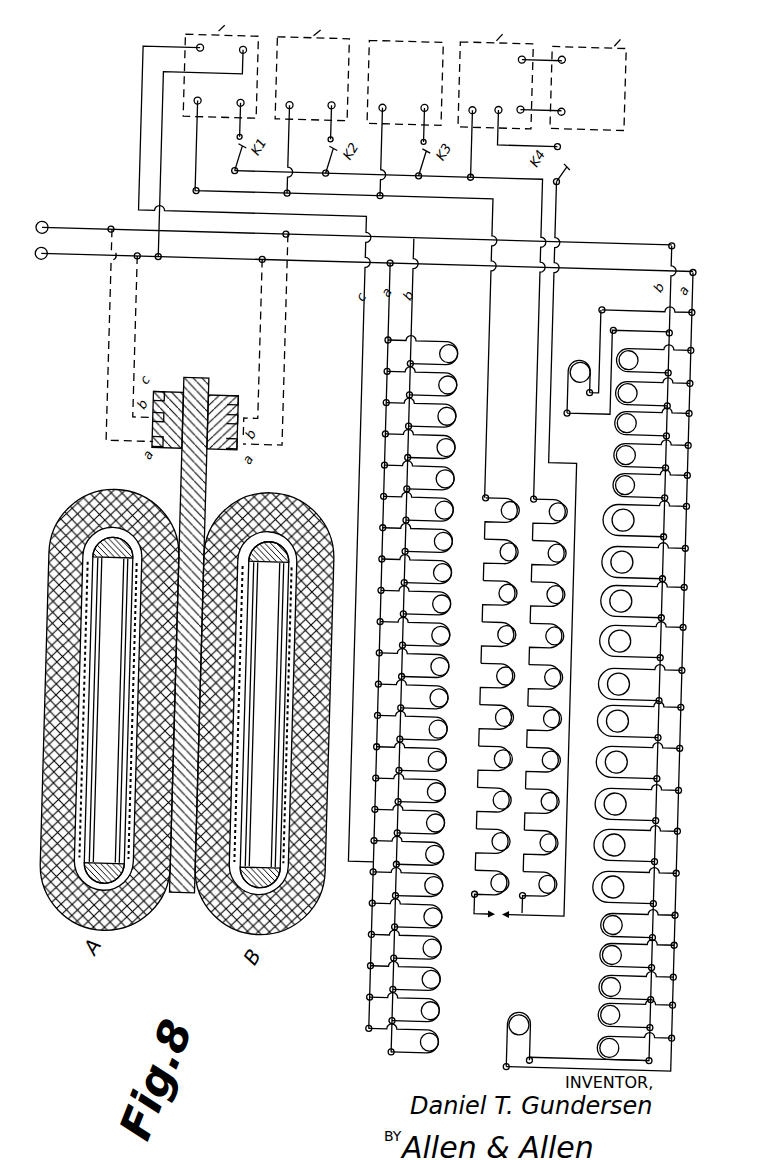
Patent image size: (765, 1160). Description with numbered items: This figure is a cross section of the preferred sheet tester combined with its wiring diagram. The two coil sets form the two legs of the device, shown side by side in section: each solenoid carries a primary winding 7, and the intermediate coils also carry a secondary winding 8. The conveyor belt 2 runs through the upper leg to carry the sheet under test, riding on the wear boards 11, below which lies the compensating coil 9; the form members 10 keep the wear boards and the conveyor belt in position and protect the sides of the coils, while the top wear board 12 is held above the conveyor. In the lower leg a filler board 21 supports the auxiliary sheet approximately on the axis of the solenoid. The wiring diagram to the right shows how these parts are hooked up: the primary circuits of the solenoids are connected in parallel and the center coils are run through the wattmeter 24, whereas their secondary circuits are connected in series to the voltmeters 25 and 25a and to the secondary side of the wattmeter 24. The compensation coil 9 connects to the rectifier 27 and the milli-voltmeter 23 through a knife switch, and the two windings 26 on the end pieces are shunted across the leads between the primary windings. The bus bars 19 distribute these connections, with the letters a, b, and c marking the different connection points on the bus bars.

The conveyor belt 2 is at (57, 825).
The primary winding 7 is at (455, 999).
The secondary winding 8 is at (58, 752).
The compensating coil 9 is at (145, 867).
The form members 10 is at (87, 522).
The wear boards 11 is at (121, 633).
The top wear board 12 is at (92, 708).
The bus bars 19 is at (233, 399).
The filler board 21 is at (288, 870).
The milli-voltmeter 23 is at (621, 77).
The wattmeter 24 is at (230, 65).
The voltmeter 25 is at (334, 68).
The voltmeter 25a is at (405, 82).
The end piece winding 26 is at (580, 356).
The rectifier 27 is at (505, 73).